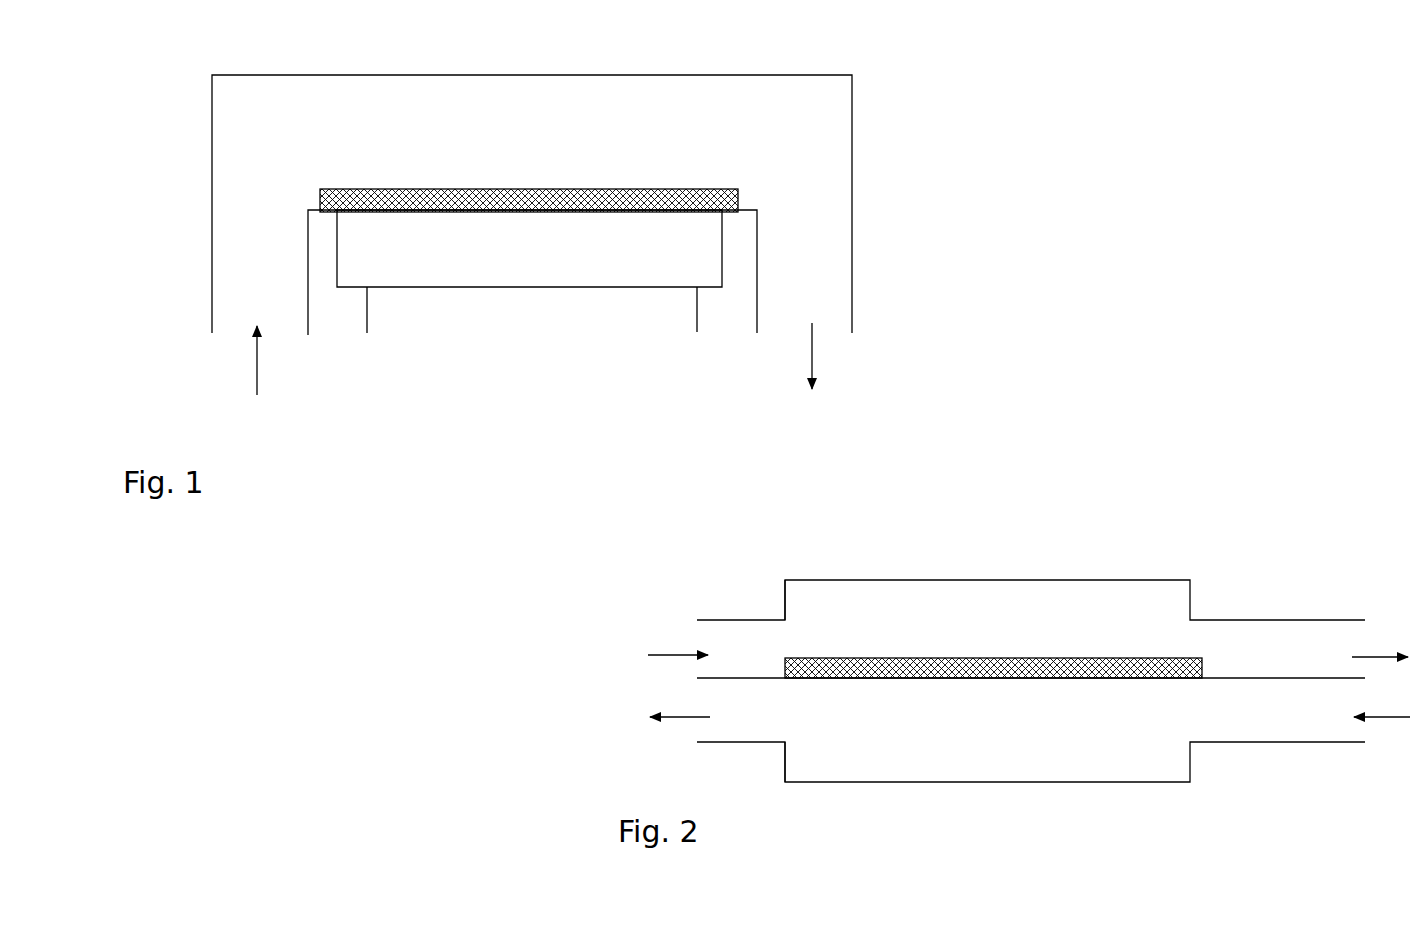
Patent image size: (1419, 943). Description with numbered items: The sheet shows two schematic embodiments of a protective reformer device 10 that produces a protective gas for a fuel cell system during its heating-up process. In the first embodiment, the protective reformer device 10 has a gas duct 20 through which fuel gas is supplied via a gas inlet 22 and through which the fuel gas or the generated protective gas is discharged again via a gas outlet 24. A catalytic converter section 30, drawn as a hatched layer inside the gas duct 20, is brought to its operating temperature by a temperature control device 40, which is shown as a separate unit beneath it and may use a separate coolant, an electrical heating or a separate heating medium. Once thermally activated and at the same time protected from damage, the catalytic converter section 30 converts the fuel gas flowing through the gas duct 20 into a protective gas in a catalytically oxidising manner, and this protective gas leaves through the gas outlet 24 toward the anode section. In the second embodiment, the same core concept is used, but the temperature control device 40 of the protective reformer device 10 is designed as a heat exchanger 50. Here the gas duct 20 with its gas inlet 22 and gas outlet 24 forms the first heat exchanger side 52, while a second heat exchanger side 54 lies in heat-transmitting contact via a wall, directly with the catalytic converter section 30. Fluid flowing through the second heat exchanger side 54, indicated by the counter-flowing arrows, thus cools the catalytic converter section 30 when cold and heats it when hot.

In FIG. 1, the protective reformer device 10 is at (905, 160).
In FIG. 2, the protective reformer device 10 is at (1236, 536).
In FIG. 1, the gas duct 20 is at (465, 128).
In FIG. 2, the gas duct 20 is at (1003, 613).
In FIG. 1, the gas inlet 22 is at (228, 330).
In FIG. 2, the gas inlet 22 is at (683, 646).
In FIG. 1, the gas outlet 24 is at (830, 330).
In FIG. 2, the gas outlet 24 is at (1364, 641).
In FIG. 1, the catalytic converter section 30 is at (626, 190).
In FIG. 2, the catalytic converter section 30 is at (1078, 658).
In FIG. 1, the temperature control device 40 is at (530, 262).
In FIG. 2, the temperature control device 40 is at (1184, 706).
In FIG. 2, the heat exchanger 50 is at (598, 695).
In FIG. 2, the first heat exchanger side 52 is at (830, 620).
In FIG. 2, the second heat exchanger side 54 is at (855, 728).